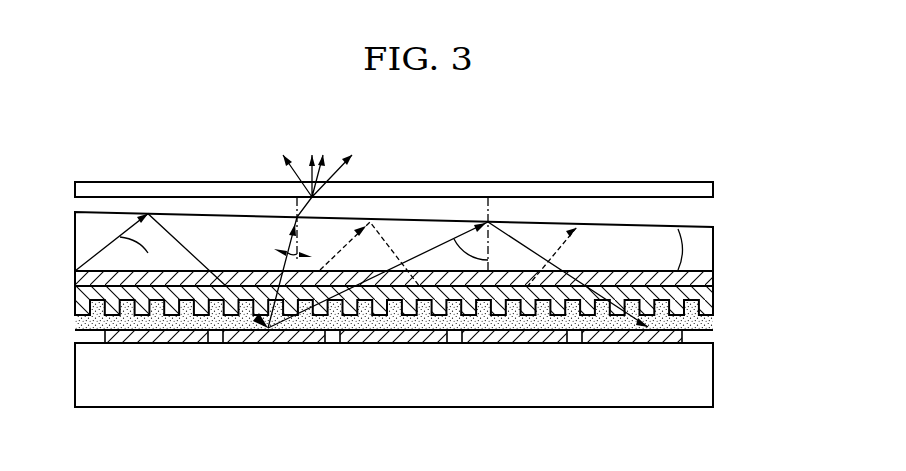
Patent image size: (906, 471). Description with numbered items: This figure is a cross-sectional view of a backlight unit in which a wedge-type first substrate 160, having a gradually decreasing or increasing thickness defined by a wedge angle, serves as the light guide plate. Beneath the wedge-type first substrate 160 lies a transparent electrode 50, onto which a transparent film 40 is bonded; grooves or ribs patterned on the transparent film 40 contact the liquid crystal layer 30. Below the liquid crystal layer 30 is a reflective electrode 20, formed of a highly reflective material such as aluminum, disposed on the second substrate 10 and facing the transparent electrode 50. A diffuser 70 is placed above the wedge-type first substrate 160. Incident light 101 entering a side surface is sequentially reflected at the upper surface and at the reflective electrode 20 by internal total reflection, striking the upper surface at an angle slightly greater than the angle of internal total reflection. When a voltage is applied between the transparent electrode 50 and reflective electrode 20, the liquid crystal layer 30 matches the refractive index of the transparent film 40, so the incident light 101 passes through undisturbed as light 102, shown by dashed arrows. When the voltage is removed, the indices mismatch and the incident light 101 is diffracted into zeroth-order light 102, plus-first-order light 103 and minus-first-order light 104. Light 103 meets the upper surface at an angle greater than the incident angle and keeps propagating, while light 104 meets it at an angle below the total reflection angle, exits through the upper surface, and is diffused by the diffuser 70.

The second substrate 10 is at (713, 375).
The reflective electrode 20 is at (627, 343).
The liquid crystal layer 30 is at (713, 322).
The transparent film 40 is at (713, 300).
The transparent electrode 50 is at (713, 278).
The diffuser 70 is at (713, 190).
The wedge-type first substrate 160 is at (713, 252).
The incident light 101 is at (102, 247).
The 0th diffraction light 102 is at (343, 248).
The +1st diffraction light 103 is at (435, 248).
The −1st diffraction light 104 is at (286, 250).